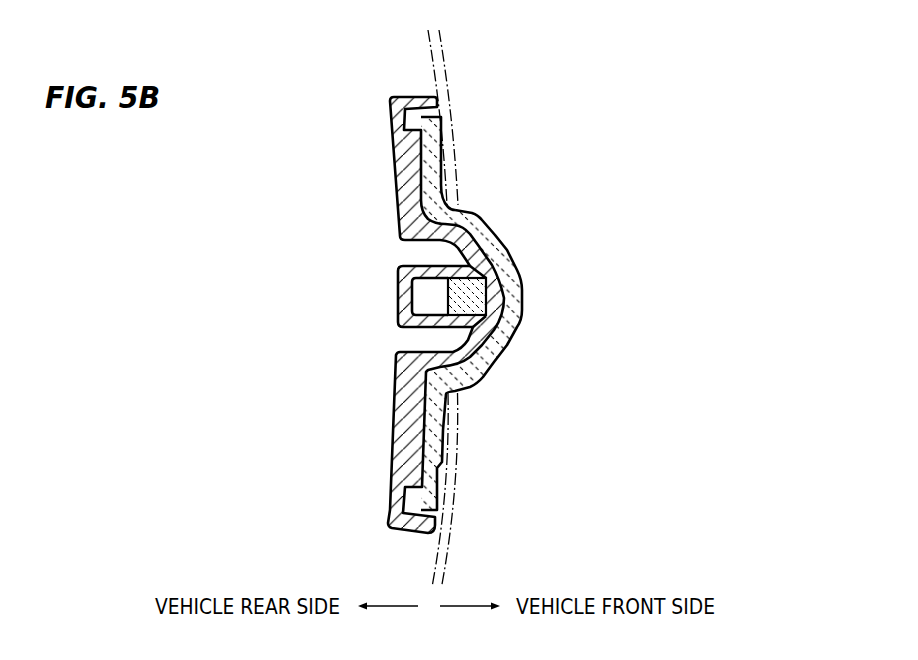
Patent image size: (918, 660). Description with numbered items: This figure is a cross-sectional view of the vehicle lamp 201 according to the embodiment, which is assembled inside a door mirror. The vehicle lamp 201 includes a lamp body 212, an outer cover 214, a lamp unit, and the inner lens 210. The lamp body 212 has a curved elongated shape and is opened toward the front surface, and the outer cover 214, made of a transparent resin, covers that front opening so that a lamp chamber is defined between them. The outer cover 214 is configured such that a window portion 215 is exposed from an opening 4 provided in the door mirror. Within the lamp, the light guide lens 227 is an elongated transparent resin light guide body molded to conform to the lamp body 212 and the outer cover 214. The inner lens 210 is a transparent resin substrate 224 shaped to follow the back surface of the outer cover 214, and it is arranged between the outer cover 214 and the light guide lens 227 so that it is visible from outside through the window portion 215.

The opening 4 is at (465, 205).
The vehicle lamp 201 is at (486, 315).
The inner lens 210 is at (530, 313).
The transparent resin substrate 224 is at (503, 331).
The lamp body 212 is at (403, 267).
The outer cover 214 is at (483, 378).
The window portion 215 is at (507, 247).
The light guide lens 227 is at (447, 293).